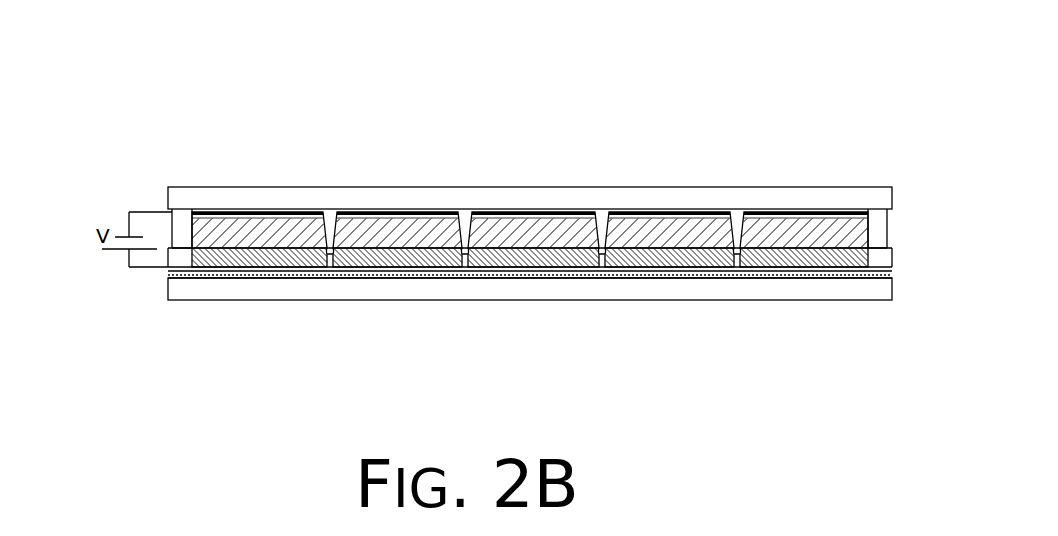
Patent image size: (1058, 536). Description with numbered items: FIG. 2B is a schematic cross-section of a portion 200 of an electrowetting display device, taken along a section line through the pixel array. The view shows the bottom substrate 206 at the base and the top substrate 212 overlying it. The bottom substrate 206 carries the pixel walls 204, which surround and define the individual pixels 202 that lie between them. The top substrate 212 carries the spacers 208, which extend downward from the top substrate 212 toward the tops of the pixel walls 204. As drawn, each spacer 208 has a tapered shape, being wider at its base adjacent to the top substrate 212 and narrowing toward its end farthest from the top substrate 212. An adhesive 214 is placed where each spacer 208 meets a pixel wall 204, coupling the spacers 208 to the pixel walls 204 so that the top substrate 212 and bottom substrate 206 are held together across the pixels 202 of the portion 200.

The portion 200 is at (797, 56).
The pixel 202 is at (245, 296).
The pixel wall 204 is at (467, 254).
The bottom substrate 206 is at (182, 300).
The spacer 208 is at (467, 213).
The top substrate 212 is at (328, 187).
The adhesive 214 is at (331, 254).